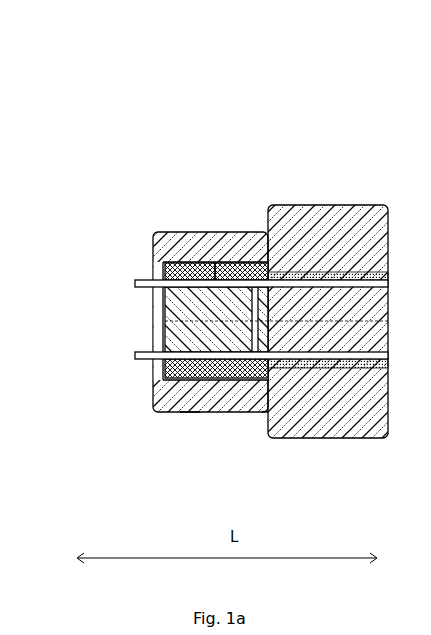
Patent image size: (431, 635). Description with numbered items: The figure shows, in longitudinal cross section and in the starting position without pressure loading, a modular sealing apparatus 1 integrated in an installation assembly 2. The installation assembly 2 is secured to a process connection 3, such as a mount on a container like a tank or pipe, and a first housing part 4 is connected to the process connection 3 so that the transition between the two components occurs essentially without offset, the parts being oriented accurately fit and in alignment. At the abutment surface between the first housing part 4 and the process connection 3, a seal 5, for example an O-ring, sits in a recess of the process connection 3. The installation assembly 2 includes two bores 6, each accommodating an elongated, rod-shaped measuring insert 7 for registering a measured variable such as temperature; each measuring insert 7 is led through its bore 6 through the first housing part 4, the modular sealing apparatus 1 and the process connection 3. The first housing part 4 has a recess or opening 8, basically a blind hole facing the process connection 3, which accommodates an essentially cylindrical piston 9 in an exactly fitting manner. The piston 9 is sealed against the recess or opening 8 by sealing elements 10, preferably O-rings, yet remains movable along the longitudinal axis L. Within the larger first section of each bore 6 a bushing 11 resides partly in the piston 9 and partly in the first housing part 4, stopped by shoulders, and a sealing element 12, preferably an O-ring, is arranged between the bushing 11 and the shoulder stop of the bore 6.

The modular sealing apparatus 1 is at (124, 256).
The installation assembly 2 is at (150, 106).
The process connection 3 is at (345, 212).
The first housing part 4 is at (207, 260).
The seal 5 is at (262, 262).
The bore 6 is at (392, 327).
The measuring insert 7 is at (127, 361).
The recess or opening 8 is at (262, 322).
The piston 9 is at (134, 284).
The sealing element 10 is at (214, 264).
The bushing 11 is at (207, 413).
The sealing element 12 is at (185, 412).